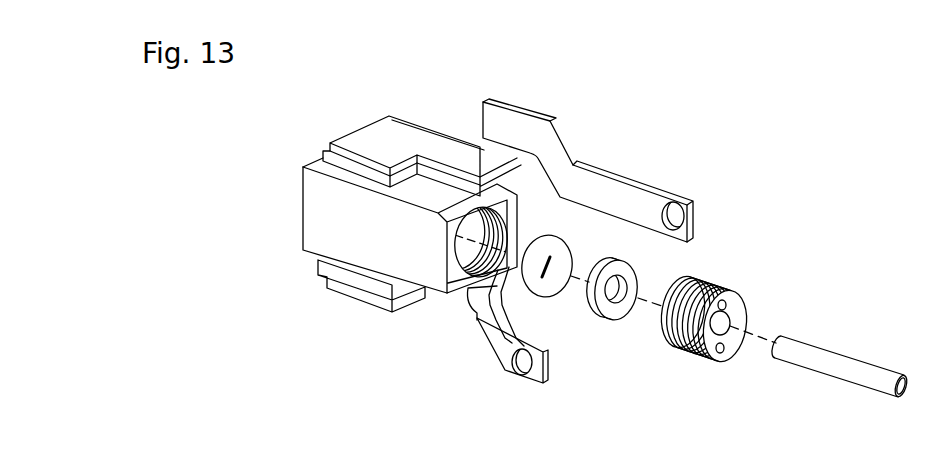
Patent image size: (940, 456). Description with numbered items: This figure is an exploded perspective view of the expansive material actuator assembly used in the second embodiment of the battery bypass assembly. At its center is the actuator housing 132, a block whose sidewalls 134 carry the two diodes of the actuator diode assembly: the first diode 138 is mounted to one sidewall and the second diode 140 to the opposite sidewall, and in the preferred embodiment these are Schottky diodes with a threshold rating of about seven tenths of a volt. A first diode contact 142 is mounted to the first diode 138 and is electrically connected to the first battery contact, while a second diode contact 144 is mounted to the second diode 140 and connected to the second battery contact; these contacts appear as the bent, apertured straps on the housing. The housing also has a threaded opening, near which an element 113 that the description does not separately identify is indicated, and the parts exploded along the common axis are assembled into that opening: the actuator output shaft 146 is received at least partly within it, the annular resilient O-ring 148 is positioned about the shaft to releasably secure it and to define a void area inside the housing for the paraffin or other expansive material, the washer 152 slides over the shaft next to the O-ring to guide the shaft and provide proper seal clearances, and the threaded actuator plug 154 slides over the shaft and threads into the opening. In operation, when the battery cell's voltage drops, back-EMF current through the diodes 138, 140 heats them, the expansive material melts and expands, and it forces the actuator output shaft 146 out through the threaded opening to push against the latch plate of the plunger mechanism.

The threaded bore 113 is at (474, 260).
The actuator housing 132 is at (302, 198).
The sidewalls 134 is at (320, 237).
The first diode 138 is at (367, 287).
The second diode 140 is at (323, 162).
The first diode contact 142 is at (500, 348).
The second diode contact 144 is at (392, 135).
The actuator output shaft 146 is at (847, 350).
The O-ring 148 is at (561, 237).
The washer 152 is at (614, 321).
The threaded actuator plug 154 is at (713, 287).